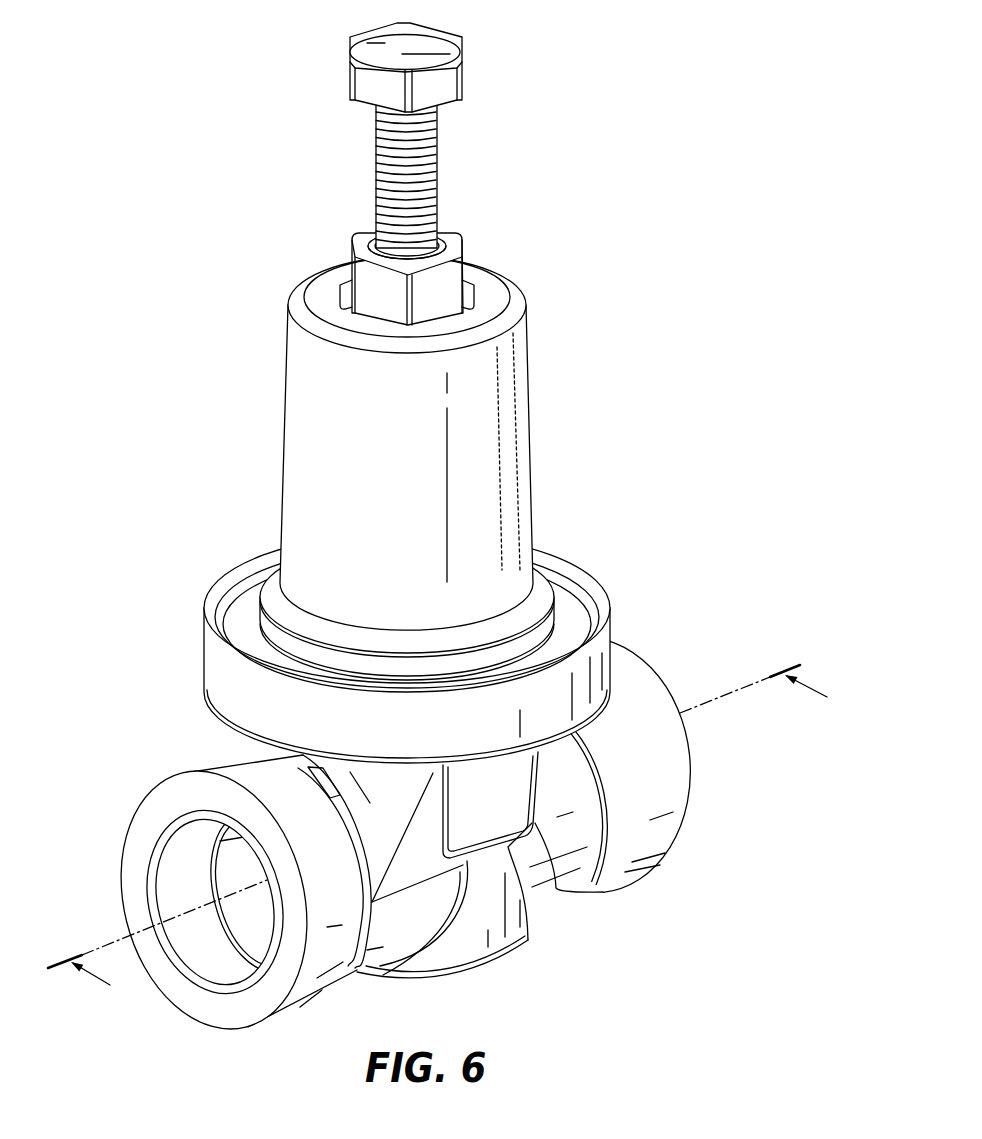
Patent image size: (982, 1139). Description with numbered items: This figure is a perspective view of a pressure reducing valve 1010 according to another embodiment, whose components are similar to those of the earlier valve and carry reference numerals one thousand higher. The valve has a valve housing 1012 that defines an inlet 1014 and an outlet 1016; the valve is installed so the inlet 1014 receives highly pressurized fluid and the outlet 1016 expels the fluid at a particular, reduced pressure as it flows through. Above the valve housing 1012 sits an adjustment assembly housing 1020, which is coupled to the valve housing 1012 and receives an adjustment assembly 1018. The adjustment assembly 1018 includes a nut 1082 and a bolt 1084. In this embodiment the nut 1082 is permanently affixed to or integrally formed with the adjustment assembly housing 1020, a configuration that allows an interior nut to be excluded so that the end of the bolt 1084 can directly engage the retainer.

The pressure reducing valve 1010 is at (238, 115).
The valve housing 1012 is at (524, 792).
The inlet 1014 is at (145, 900).
The outlet 1016 is at (675, 681).
The adjustment assembly 1018 is at (395, 326).
The adjustment assembly housing 1020 is at (513, 388).
The nut 1082 is at (437, 283).
The bolt 1084 is at (427, 157).